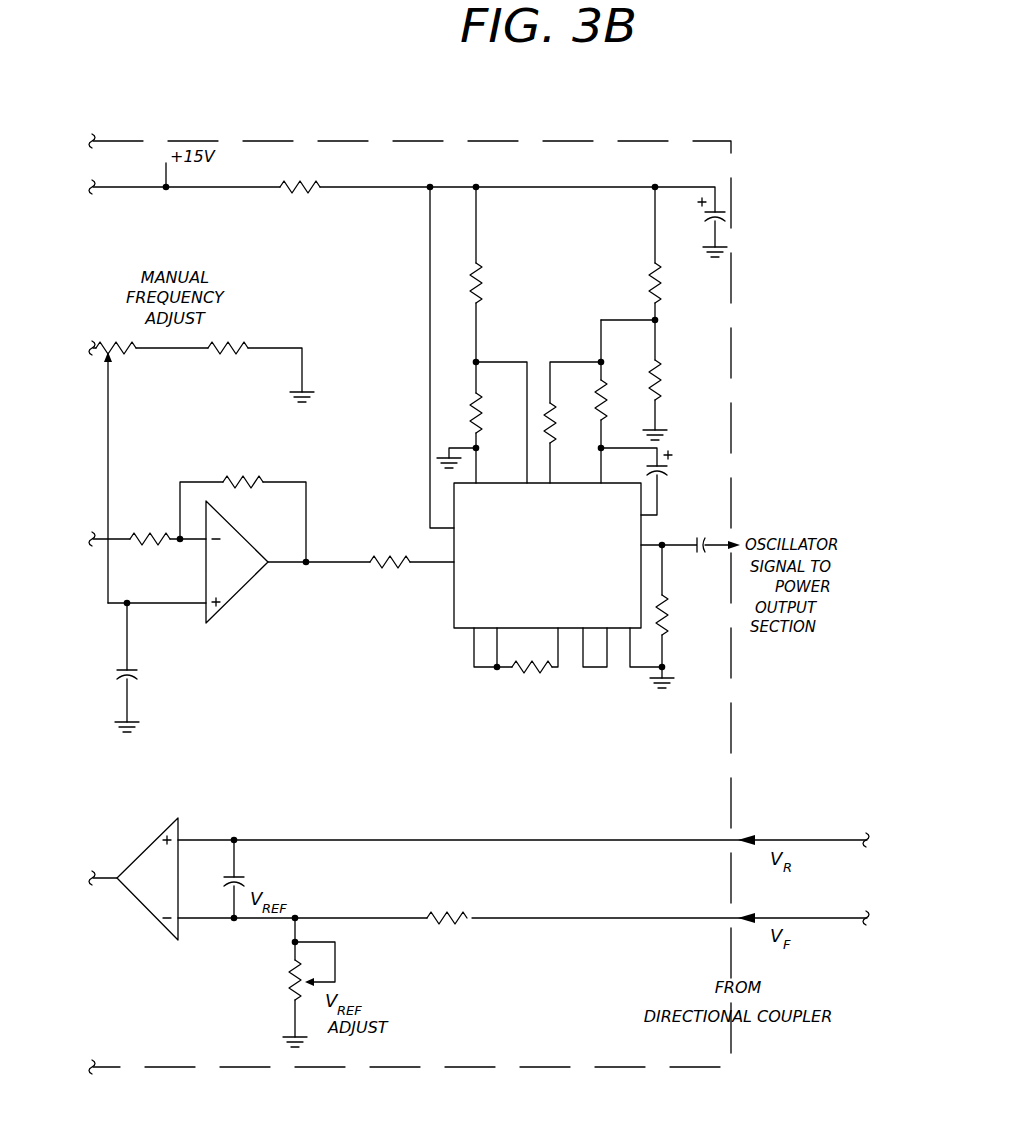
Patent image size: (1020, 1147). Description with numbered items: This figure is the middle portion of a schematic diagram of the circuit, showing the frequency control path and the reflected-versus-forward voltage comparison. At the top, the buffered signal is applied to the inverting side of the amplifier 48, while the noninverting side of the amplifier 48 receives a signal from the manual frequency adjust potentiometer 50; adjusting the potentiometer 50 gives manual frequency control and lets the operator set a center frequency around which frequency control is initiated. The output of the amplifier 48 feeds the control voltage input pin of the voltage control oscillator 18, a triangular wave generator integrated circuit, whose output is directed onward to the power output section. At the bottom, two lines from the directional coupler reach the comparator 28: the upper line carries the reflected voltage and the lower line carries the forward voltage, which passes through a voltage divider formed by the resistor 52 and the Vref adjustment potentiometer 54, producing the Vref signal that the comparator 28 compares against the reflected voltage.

The voltage control oscillator 18 is at (535, 565).
The comparator 28 is at (152, 846).
The amplifier 48 is at (232, 585).
The manual frequency adjust potentiometer 50 is at (128, 354).
The resistor 52 is at (446, 925).
The Vref adjustment potentiometer 54 is at (290, 994).